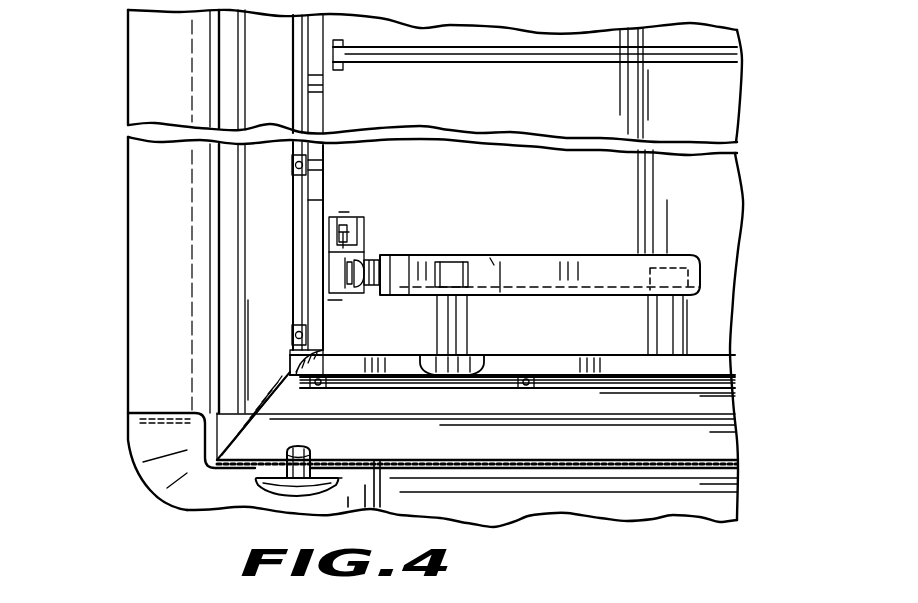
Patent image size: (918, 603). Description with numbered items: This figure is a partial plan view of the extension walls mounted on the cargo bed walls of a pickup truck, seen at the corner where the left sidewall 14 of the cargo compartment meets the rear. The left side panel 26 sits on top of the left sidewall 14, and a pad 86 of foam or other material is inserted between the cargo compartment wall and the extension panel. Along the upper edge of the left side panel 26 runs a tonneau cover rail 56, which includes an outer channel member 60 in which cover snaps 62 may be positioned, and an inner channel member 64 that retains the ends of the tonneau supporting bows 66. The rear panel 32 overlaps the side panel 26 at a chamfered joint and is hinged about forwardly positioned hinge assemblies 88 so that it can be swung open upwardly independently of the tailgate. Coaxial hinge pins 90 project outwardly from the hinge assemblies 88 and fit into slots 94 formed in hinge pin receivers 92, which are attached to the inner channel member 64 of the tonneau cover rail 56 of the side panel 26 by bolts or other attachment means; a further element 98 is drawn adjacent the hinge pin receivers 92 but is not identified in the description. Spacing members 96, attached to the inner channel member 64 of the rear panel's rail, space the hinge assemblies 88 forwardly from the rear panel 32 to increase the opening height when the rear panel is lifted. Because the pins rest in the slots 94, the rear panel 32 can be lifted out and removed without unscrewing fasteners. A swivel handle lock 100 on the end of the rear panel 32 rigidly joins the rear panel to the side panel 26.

The left sidewall 14 is at (155, 184).
The left side panel 26 is at (232, 68).
The rear panel 32 is at (516, 448).
The tonneau cover rail 56 is at (320, 33).
The outer channel member 60 is at (700, 391).
The cover snaps 62 is at (528, 389).
The inner channel member 64 is at (518, 363).
The tonneau supporting bows 66 is at (505, 65).
The pad 86 is at (720, 471).
The hinge assemblies 88 is at (452, 250).
The hinge pins 90 is at (344, 294).
The hinge pin receivers 92 is at (355, 224).
The slots 94 is at (350, 265).
The spacing members 96 is at (663, 318).
The keeper 98 is at (340, 222).
The swivel handle lock 100 is at (253, 498).